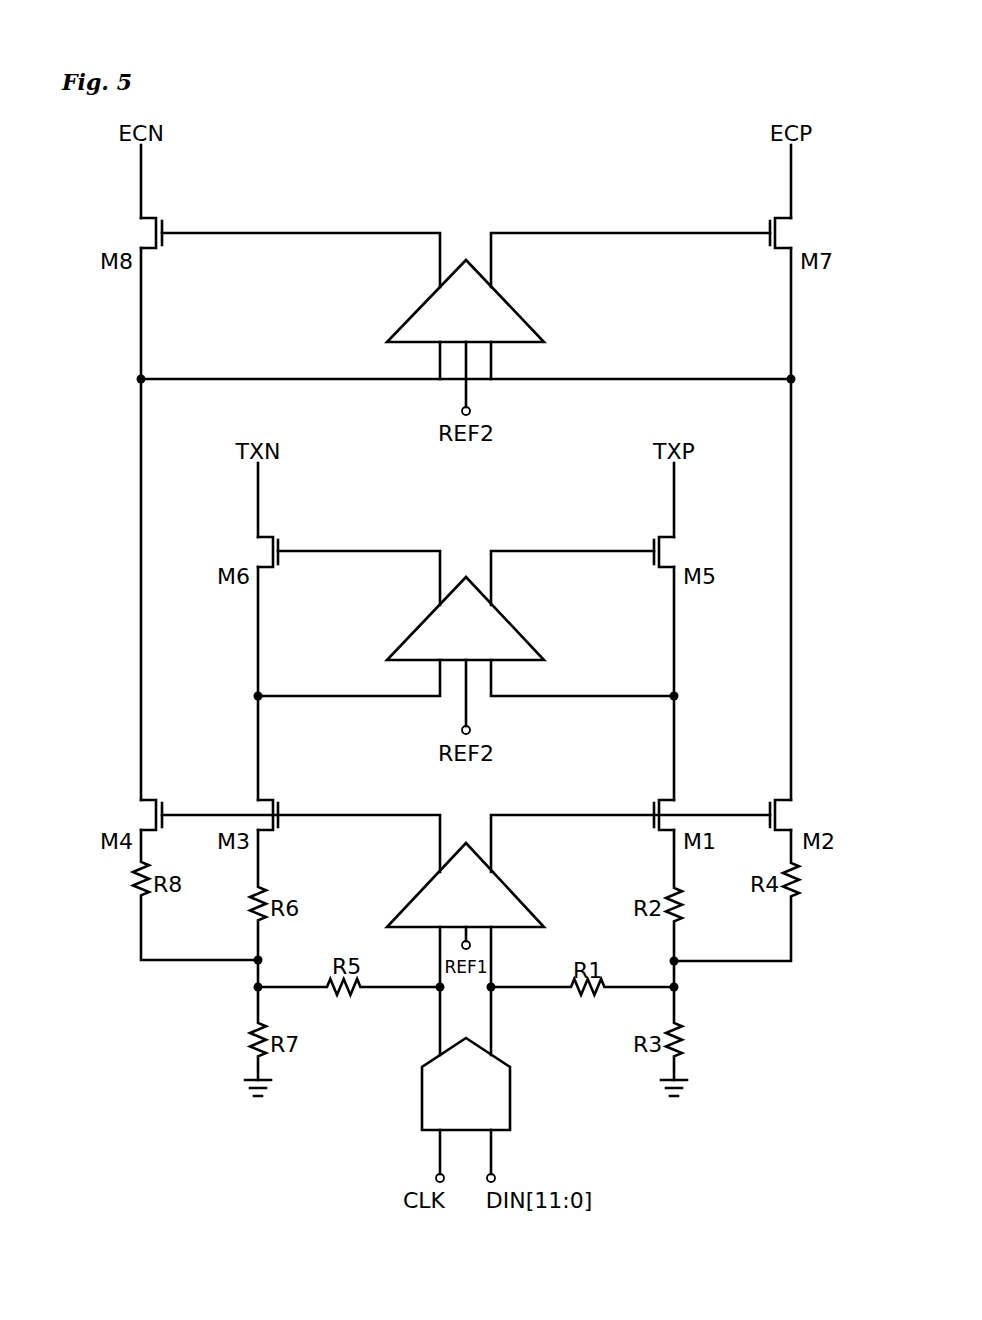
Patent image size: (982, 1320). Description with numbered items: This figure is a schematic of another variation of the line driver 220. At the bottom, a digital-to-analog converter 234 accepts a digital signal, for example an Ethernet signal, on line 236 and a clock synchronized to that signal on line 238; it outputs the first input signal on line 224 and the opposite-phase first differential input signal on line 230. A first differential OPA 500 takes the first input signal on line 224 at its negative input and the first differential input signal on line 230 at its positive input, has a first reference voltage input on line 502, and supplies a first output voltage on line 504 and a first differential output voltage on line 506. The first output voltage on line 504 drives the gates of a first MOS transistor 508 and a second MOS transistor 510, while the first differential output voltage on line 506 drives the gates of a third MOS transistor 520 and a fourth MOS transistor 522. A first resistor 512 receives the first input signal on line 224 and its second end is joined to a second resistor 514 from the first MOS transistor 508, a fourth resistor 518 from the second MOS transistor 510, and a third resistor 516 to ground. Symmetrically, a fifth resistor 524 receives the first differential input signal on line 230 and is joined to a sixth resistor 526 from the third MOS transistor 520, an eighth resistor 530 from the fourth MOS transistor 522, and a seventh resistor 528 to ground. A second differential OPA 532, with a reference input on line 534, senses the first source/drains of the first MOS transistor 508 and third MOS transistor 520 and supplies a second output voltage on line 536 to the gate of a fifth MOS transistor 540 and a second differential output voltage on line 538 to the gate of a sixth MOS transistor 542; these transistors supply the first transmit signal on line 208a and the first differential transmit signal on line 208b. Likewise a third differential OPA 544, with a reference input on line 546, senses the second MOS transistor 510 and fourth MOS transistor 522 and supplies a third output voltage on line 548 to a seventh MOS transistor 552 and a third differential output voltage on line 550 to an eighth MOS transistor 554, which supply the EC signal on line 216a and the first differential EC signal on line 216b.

The line driver 220 is at (655, 103).
The first differential EC signal line 216b is at (143, 196).
The EC signal line 216a is at (788, 196).
The eighth MOS transistor 554 is at (132, 233).
The seventh MOS transistor 552 is at (799, 233).
The third differential output voltage line 550 is at (285, 233).
The third output voltage line 548 is at (648, 233).
The third differential OPA 544 is at (425, 318).
The second reference voltage input line of third differential OPA 546 is at (462, 393).
The first differential transmit signal line 208b is at (262, 481).
The first transmit signal line 208a is at (671, 481).
The sixth MOS transistor 542 is at (250, 549).
The fifth MOS transistor 540 is at (683, 549).
The second differential output voltage line 538 is at (346, 551).
The second output voltage line 536 is at (586, 551).
The second differential OPA 532 is at (427, 634).
The second reference voltage input line of second differential OPA 534 is at (462, 710).
The fourth MOS transistor 522 is at (128, 811).
The third MOS transistor 520 is at (246, 811).
The first MOS transistor 508 is at (681, 811).
The second MOS transistor 510 is at (805, 811).
The first differential output voltage line 506 is at (348, 815).
The first output voltage line 504 is at (585, 815).
The first differential OPA 500 is at (425, 900).
The first reference voltage input line 502 is at (460, 938).
The eighth resistor 530 is at (133, 880).
The sixth resistor 526 is at (250, 905).
The seventh resistor 528 is at (250, 1043).
The fifth resistor 524 is at (346, 997).
The first resistor 512 is at (587, 998).
The second resistor 514 is at (682, 906).
The fourth resistor 518 is at (800, 880).
The third resistor 516 is at (685, 1045).
The first differential input signal line 230 is at (437, 1040).
The first input signal line 224 is at (495, 1040).
The digital-to-analog converter 234 is at (449, 1124).
The clock input line 238 is at (437, 1148).
The digital signal input line 236 is at (495, 1148).